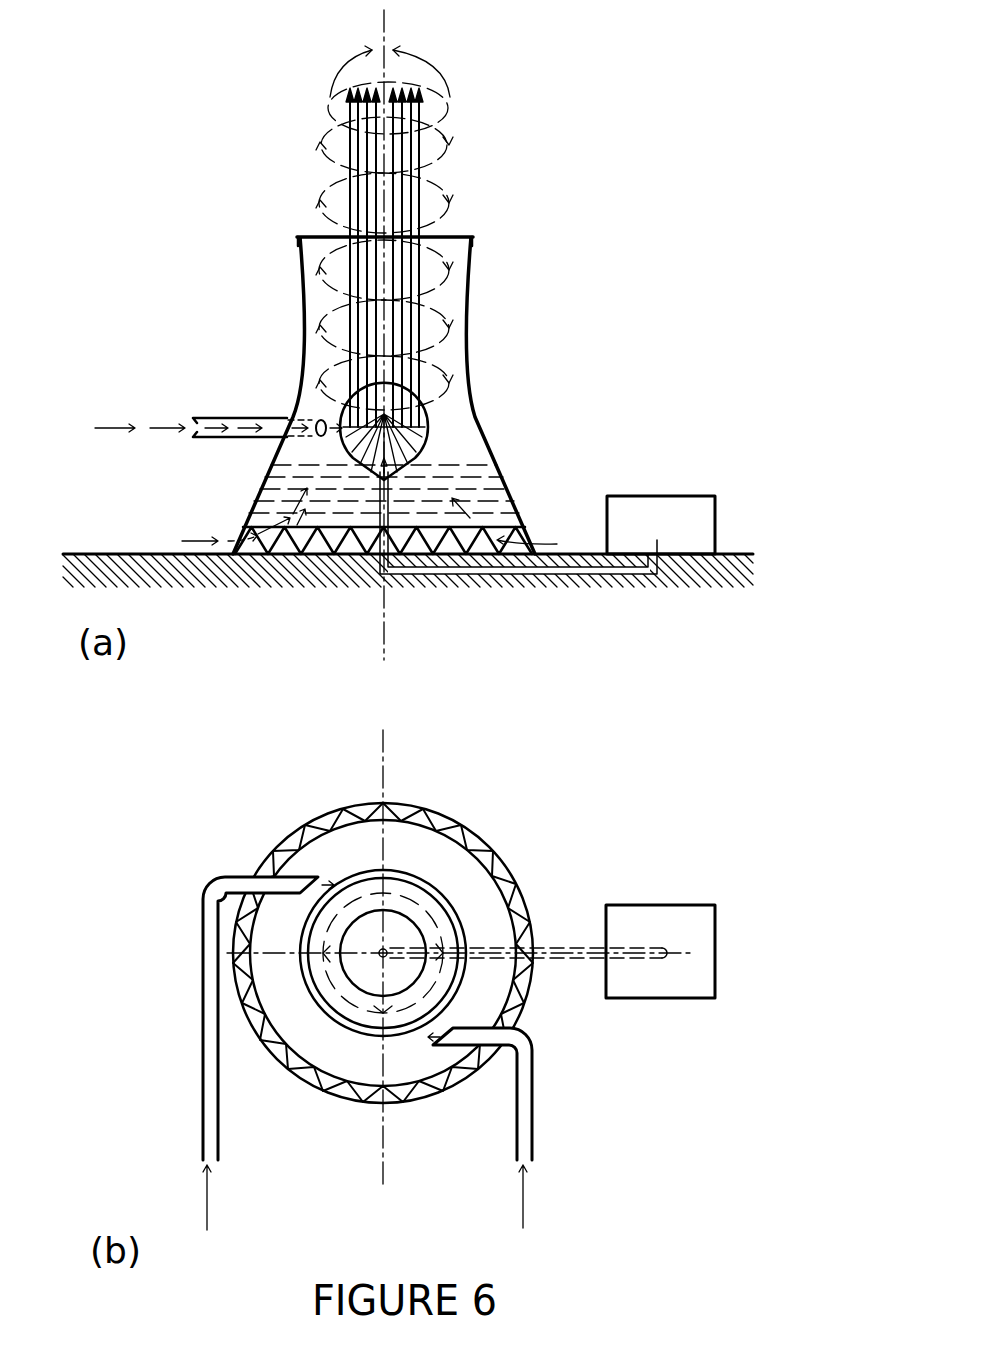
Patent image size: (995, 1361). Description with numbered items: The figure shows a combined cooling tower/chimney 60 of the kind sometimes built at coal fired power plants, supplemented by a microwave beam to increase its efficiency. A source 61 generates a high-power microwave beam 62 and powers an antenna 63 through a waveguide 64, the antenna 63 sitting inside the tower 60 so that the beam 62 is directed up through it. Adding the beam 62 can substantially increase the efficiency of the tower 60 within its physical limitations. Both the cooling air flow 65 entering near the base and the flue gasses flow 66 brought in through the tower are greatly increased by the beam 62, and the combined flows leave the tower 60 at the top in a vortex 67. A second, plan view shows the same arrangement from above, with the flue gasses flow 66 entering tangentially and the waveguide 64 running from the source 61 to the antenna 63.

The cooling tower 60 is at (270, 318).
The source 61 is at (690, 510).
The high-power microwave beam 62 is at (411, 156).
The antenna 63 is at (420, 450).
The waveguide 64 is at (528, 572).
The cooling air flow 65 is at (198, 541).
The flue gasses flow 66 is at (114, 428).
The vortex 67 is at (445, 80).